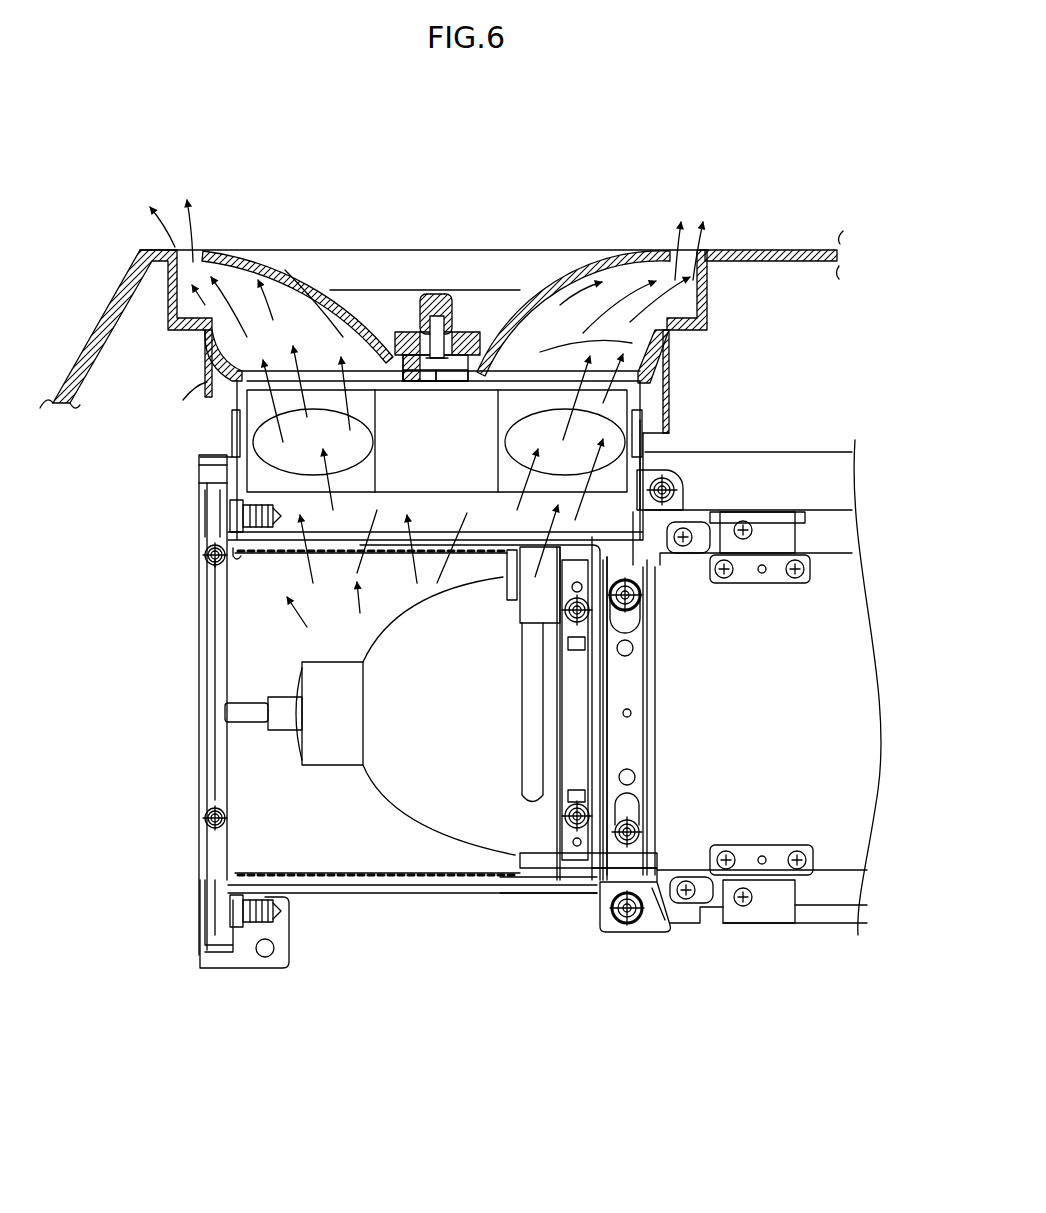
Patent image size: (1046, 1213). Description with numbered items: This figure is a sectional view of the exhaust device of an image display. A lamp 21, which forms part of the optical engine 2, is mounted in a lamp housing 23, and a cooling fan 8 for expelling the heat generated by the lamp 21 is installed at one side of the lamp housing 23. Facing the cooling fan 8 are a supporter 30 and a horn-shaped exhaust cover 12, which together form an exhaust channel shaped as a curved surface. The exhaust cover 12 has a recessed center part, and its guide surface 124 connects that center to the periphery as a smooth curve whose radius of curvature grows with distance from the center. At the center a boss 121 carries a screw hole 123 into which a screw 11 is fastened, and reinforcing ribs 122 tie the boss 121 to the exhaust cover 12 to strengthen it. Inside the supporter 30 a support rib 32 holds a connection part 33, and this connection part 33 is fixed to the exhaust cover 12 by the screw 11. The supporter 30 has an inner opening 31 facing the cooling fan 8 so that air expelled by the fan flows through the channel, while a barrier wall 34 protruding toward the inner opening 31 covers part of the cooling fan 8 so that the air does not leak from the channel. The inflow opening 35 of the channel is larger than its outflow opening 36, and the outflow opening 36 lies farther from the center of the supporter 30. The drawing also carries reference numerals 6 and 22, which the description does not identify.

The optical engine 2 is at (423, 908).
The cabinet top plate 6 is at (770, 234).
The cooling fan 8 is at (405, 478).
The screw 11 is at (395, 333).
The exhaust cover 12 is at (537, 264).
The boss 121 is at (458, 294).
The reinforcing ribs 122 is at (368, 292).
The screw hole 123 is at (428, 294).
The guide surface 124 is at (597, 256).
The lamp 21 is at (400, 777).
The lamp housing bracket 22 is at (203, 937).
The lamp housing 23 is at (467, 880).
The supporter 30 is at (163, 305).
The inner opening 31 is at (233, 411).
The support rib 32 is at (465, 384).
The connection part 33 is at (438, 382).
The barrier wall 34 is at (210, 366).
The inflow opening 35 is at (655, 350).
The outflow opening 36 is at (698, 281).